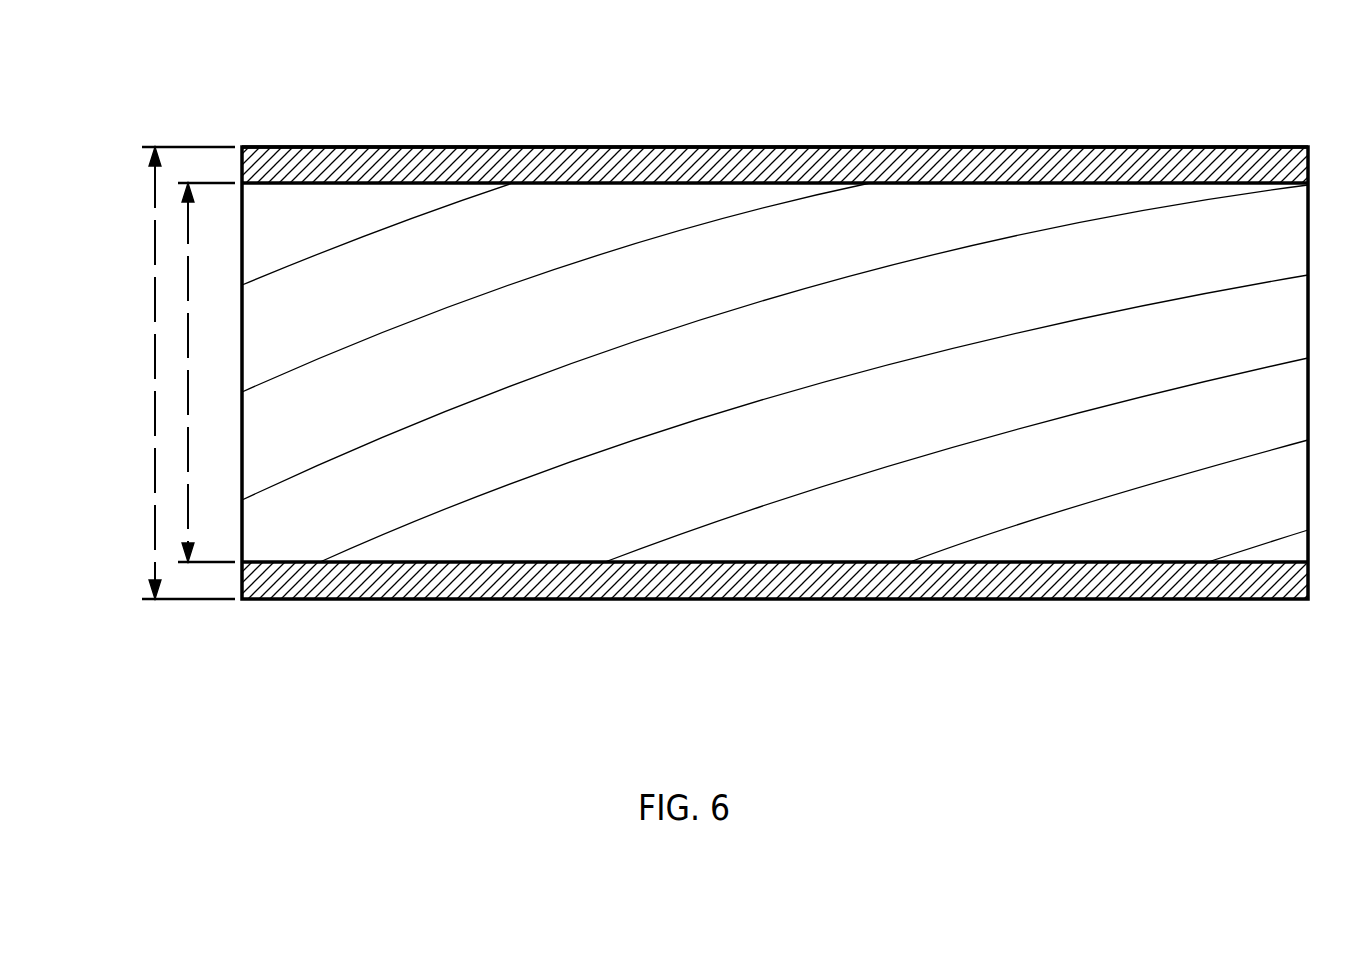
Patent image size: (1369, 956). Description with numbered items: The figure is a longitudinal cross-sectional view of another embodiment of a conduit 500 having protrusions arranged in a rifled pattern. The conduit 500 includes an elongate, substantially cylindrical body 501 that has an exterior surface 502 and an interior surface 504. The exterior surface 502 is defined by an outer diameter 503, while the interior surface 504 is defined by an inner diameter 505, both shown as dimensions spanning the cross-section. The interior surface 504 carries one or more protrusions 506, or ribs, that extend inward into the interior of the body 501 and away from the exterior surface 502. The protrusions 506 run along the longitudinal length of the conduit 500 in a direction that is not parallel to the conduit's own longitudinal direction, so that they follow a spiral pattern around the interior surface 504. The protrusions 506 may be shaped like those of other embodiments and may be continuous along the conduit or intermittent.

The conduit 500 is at (248, 97).
The body 501 is at (990, 170).
The exterior surface 502 is at (843, 145).
The outer diameter 503 is at (155, 467).
The interior surface 504 is at (862, 560).
The inner diameter 505 is at (188, 360).
The protrusions 506 is at (887, 470).